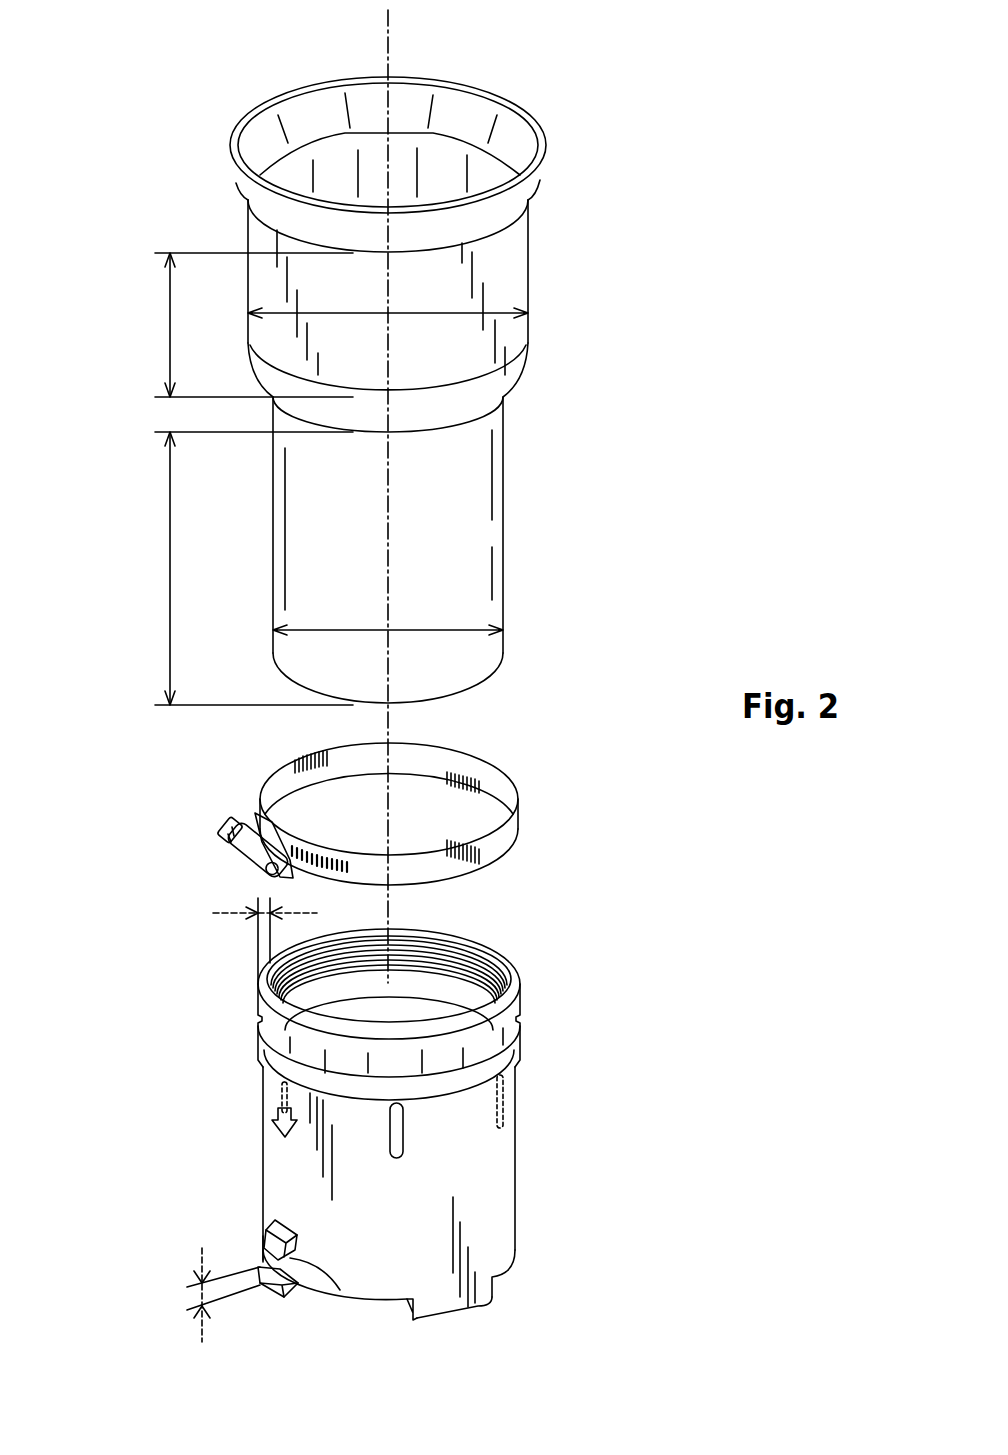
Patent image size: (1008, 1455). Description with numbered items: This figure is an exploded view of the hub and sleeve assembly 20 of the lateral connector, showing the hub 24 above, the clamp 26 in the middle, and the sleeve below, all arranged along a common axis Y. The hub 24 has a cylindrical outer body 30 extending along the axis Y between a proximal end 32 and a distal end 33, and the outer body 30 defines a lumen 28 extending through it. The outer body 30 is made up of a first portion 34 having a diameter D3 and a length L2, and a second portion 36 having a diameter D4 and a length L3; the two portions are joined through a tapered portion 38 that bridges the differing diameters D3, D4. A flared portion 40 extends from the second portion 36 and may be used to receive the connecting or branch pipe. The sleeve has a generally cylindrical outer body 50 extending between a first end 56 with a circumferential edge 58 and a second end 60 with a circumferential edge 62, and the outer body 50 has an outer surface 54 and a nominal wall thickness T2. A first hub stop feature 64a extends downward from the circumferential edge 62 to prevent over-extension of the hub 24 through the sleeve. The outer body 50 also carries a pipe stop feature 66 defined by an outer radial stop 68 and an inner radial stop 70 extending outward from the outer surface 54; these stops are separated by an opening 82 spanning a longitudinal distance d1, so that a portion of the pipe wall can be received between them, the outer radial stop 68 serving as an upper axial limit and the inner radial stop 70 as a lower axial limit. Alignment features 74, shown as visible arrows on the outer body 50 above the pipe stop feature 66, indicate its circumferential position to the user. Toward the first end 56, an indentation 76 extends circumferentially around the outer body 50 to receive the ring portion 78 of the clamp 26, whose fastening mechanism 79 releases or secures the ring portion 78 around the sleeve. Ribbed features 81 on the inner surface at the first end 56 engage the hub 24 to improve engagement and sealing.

The hub and sleeve assembly 20 is at (778, 326).
The hub 24 is at (541, 177).
The clamp 26 is at (517, 813).
The lumen 28 is at (340, 163).
The outer body 30 is at (505, 488).
The proximal end 32 is at (503, 88).
The distal end 33 is at (473, 687).
The first portion 34 is at (505, 563).
The second portion 36 is at (530, 260).
The tapered portion 38 is at (510, 378).
The flared portion 40 is at (236, 183).
The outer body 50 is at (498, 1158).
The outer surface 54 is at (498, 1207).
The first end 56 is at (258, 995).
The circumferential edge 58 is at (505, 997).
The second end 60 is at (372, 1302).
The circumferential edge 62 is at (507, 1265).
The first hub stop feature 64a is at (483, 1303).
The pipe stop feature 66 is at (273, 1233).
The outer radial stop 68 is at (263, 1250).
The inner radial stop 70 is at (267, 1285).
The alignment features 74 is at (273, 1120).
The indentation 76 is at (278, 1040).
The ring portion 78 is at (497, 847).
The fastening mechanism 79 is at (243, 853).
The ribbed features 81 is at (450, 968).
The opening 82 is at (283, 1257).
The axis Y is at (388, 37).
The length L2 is at (166, 570).
The length L3 is at (166, 325).
The diameter D3 is at (440, 630).
The diameter D4 is at (452, 313).
The nominal thickness T2 is at (228, 913).
The longitudinal distance d1 is at (200, 1293).